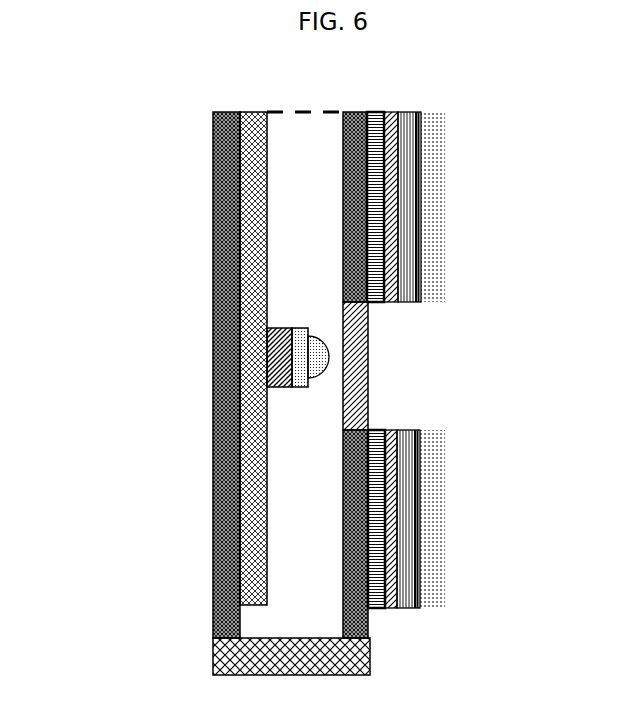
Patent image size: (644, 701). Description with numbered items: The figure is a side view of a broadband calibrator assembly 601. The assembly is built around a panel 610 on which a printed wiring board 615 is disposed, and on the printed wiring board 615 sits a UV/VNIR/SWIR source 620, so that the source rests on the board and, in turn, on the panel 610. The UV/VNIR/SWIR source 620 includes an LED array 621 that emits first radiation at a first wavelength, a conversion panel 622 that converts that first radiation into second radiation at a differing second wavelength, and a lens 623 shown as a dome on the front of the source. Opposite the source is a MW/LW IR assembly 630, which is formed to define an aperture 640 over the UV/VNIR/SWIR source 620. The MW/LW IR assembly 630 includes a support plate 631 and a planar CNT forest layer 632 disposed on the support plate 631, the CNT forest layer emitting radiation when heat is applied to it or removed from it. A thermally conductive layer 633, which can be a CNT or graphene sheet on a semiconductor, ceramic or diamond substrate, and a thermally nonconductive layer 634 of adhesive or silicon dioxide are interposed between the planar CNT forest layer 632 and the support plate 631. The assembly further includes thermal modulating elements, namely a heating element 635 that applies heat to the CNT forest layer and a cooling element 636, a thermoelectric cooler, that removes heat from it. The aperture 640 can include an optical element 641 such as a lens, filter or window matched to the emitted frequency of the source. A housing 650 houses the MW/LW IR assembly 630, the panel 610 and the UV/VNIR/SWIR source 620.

The broadband calibrator assembly 601 is at (170, 102).
The panel 610 is at (225, 222).
The printed wiring board 615 is at (253, 446).
The UV/VNIR/SWIR source 620 is at (272, 362).
The LED array 621 is at (283, 332).
The conversion panel 622 is at (299, 388).
The lens 623 is at (322, 352).
The MW/LW IR assembly 630 is at (443, 125).
The support plate 631 is at (355, 120).
The planar CNT forest layer 632 is at (435, 190).
The thermally conductive layer 633 is at (405, 112).
The thermally nonconductive layer 634 is at (423, 112).
The heating element 635 is at (392, 563).
The cooling element 636 is at (378, 472).
The aperture 640 is at (452, 366).
The optical element 641 is at (358, 385).
The housing 650 is at (222, 658).